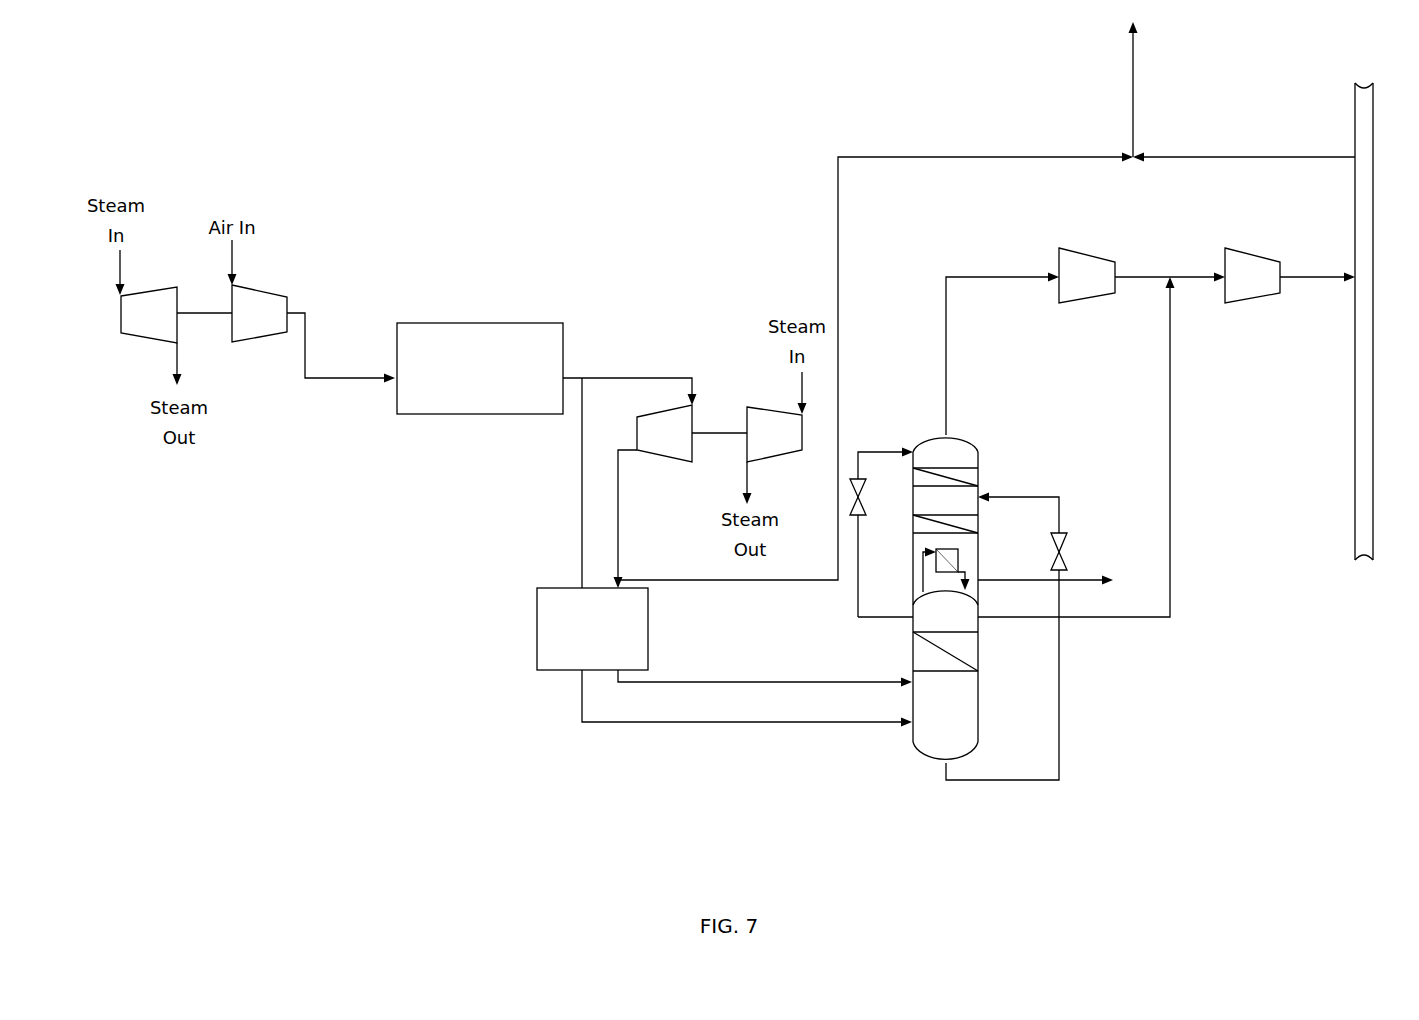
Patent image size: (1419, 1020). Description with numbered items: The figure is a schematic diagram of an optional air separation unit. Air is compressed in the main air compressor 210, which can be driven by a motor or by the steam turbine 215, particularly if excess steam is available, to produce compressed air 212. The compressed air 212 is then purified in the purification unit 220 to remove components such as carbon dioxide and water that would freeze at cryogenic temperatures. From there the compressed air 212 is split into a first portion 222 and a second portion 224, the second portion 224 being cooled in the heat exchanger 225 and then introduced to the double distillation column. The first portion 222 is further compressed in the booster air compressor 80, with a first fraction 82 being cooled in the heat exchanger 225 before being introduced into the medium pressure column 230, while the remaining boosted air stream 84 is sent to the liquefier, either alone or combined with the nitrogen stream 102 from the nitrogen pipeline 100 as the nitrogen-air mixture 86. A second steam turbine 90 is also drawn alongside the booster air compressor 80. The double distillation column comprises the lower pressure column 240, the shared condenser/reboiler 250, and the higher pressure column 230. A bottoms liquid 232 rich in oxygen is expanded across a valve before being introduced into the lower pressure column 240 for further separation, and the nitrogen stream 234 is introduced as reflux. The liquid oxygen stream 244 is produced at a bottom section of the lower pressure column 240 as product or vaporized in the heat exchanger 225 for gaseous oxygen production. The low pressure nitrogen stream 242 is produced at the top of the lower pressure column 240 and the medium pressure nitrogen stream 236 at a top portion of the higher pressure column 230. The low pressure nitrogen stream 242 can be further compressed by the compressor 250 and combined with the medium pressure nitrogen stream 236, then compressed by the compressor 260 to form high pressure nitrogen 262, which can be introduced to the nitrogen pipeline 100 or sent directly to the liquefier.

The steam turbine 215 is at (130, 325).
The main air compressor 210 is at (240, 325).
The compressed air 212 is at (370, 378).
The purification unit 220 is at (468, 323).
The first portion 222 is at (666, 378).
The second portion 224 is at (582, 500).
The booster air compressor 80 is at (651, 444).
The steam turbine 90 is at (759, 444).
The remaining boosted air stream 84 is at (692, 580).
The first fraction 82 is at (740, 682).
The heat exchanger 225 is at (537, 618).
The nitrogen stream 234 is at (858, 538).
The lower pressure column 240 is at (978, 478).
The condenser/reboiler 250 is at (1068, 288).
The higher pressure column 230 is at (978, 690).
The bottoms liquid 232 is at (1048, 780).
The liquid oxygen stream 244 is at (1075, 580).
The medium pressure nitrogen stream 236 is at (1170, 450).
The low pressure nitrogen stream 242 is at (946, 392).
The compressor 260 is at (1233, 288).
The high pressure nitrogen 262 is at (1296, 272).
The nitrogen pipeline 100 is at (1375, 228).
The nitrogen stream 102 is at (1205, 157).
The nitrogen-air mixture 86 is at (1133, 100).